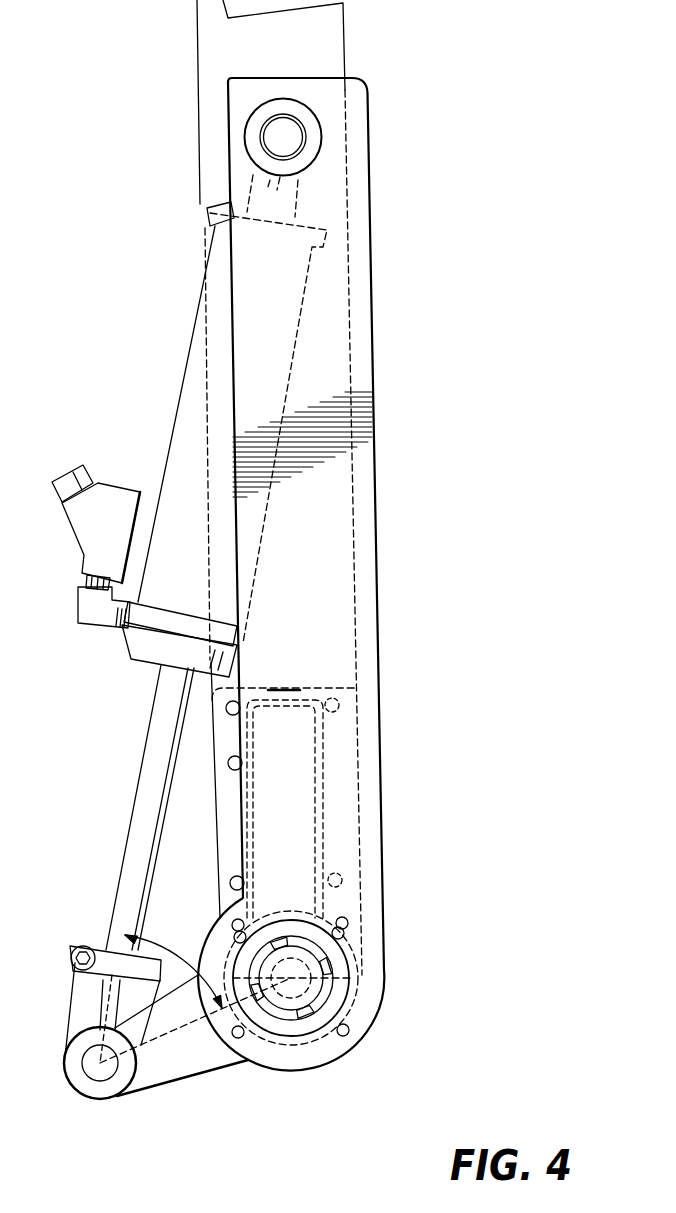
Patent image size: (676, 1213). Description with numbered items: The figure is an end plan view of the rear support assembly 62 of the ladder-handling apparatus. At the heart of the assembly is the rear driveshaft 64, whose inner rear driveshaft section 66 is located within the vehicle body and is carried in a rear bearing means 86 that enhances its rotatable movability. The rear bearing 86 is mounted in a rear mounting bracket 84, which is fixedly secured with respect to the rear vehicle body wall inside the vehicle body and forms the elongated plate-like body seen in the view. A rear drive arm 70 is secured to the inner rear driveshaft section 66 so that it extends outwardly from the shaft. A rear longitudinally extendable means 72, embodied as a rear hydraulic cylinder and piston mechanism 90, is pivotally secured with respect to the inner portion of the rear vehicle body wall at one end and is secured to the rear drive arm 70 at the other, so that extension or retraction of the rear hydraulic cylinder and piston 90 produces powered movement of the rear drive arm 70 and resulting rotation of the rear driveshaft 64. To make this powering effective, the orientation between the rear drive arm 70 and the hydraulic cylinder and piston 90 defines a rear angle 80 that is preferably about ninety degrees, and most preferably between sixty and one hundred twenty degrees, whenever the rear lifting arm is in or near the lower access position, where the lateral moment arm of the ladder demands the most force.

The rear support assembly 62 is at (396, 773).
The rear driveshaft 64 is at (293, 986).
The inner rear driveshaft section 66 is at (345, 993).
The rear drive arm 70 is at (202, 1063).
The rear longitudinally extendable means 72 is at (182, 392).
The rear angle 80 is at (178, 952).
The rear mounting bracket 84 is at (378, 630).
The rear bearing means 86 is at (320, 1023).
The rear hydraulic cylinder and piston mechanism 90 is at (158, 723).